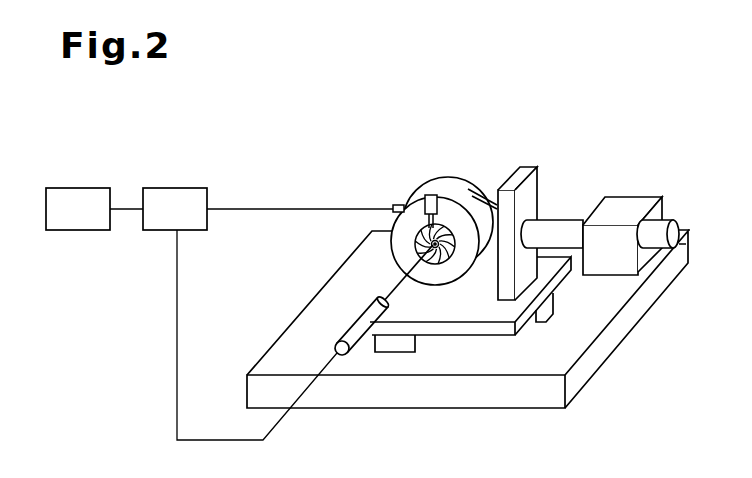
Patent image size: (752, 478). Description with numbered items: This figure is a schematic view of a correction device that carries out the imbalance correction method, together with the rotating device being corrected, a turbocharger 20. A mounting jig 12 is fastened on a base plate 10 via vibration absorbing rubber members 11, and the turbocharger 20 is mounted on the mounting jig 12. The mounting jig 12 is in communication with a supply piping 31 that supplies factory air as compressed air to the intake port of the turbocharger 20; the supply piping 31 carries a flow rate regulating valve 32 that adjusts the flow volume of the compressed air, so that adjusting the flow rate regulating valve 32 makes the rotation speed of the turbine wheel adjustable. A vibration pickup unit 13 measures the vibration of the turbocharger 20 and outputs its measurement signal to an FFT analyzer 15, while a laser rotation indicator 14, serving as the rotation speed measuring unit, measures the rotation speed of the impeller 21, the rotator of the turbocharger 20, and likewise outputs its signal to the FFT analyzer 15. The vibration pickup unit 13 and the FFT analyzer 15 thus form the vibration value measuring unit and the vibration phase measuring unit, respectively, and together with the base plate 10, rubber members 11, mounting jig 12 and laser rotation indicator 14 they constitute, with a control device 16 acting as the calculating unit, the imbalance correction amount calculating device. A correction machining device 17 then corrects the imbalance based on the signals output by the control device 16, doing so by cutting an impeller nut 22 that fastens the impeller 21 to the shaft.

The base plate 10 is at (437, 410).
The vibration absorbing rubber members 11 is at (417, 340).
The mounting jig 12 is at (487, 339).
The vibration pickup unit 13 is at (402, 204).
The laser rotation indicator 14 is at (354, 326).
The FFT analyzer 15 is at (174, 188).
The control device 16 is at (77, 188).
The correction machining device 17 is at (431, 194).
The turbocharger 20 is at (466, 182).
The impeller 21 is at (443, 263).
The impeller nut 22 is at (422, 250).
The supply piping 31 is at (557, 224).
The flow rate regulating valve 32 is at (622, 199).